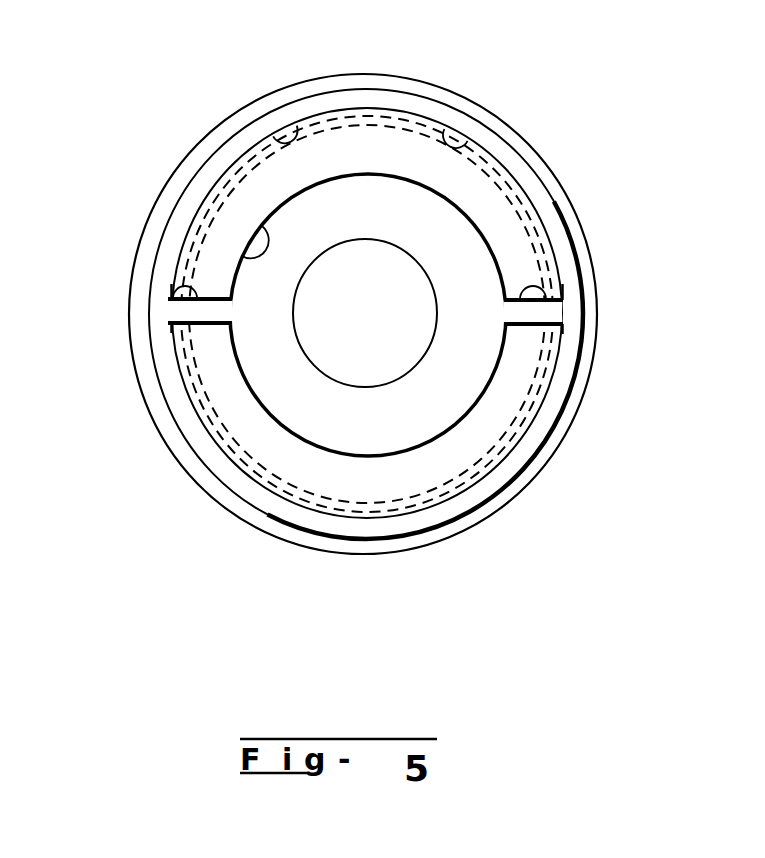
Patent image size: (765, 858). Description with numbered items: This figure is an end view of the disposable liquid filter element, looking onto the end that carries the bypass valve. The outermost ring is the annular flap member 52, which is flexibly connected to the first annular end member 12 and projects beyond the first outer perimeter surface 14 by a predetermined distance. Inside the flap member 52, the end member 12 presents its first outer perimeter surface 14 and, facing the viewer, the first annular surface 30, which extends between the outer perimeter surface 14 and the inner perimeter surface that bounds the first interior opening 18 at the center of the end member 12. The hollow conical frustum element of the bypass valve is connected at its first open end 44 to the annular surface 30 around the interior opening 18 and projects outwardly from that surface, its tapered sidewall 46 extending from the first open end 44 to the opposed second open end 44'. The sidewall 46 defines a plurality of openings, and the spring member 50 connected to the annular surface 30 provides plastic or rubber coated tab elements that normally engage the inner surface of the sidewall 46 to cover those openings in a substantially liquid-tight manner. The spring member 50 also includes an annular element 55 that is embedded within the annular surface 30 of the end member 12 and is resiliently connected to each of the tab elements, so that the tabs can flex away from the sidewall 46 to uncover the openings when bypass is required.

The first annular end member 12 is at (462, 506).
The first outer perimeter surface 14 is at (497, 497).
The first interior opening 18 is at (412, 362).
The first annular surface 30 is at (357, 527).
The first open end 44 is at (399, 314).
The second open end 44' is at (187, 214).
The tapered sidewall 46 is at (512, 387).
The spring member 50 is at (279, 133).
The annular flap member 52 is at (385, 75).
The annular element 55 is at (460, 140).